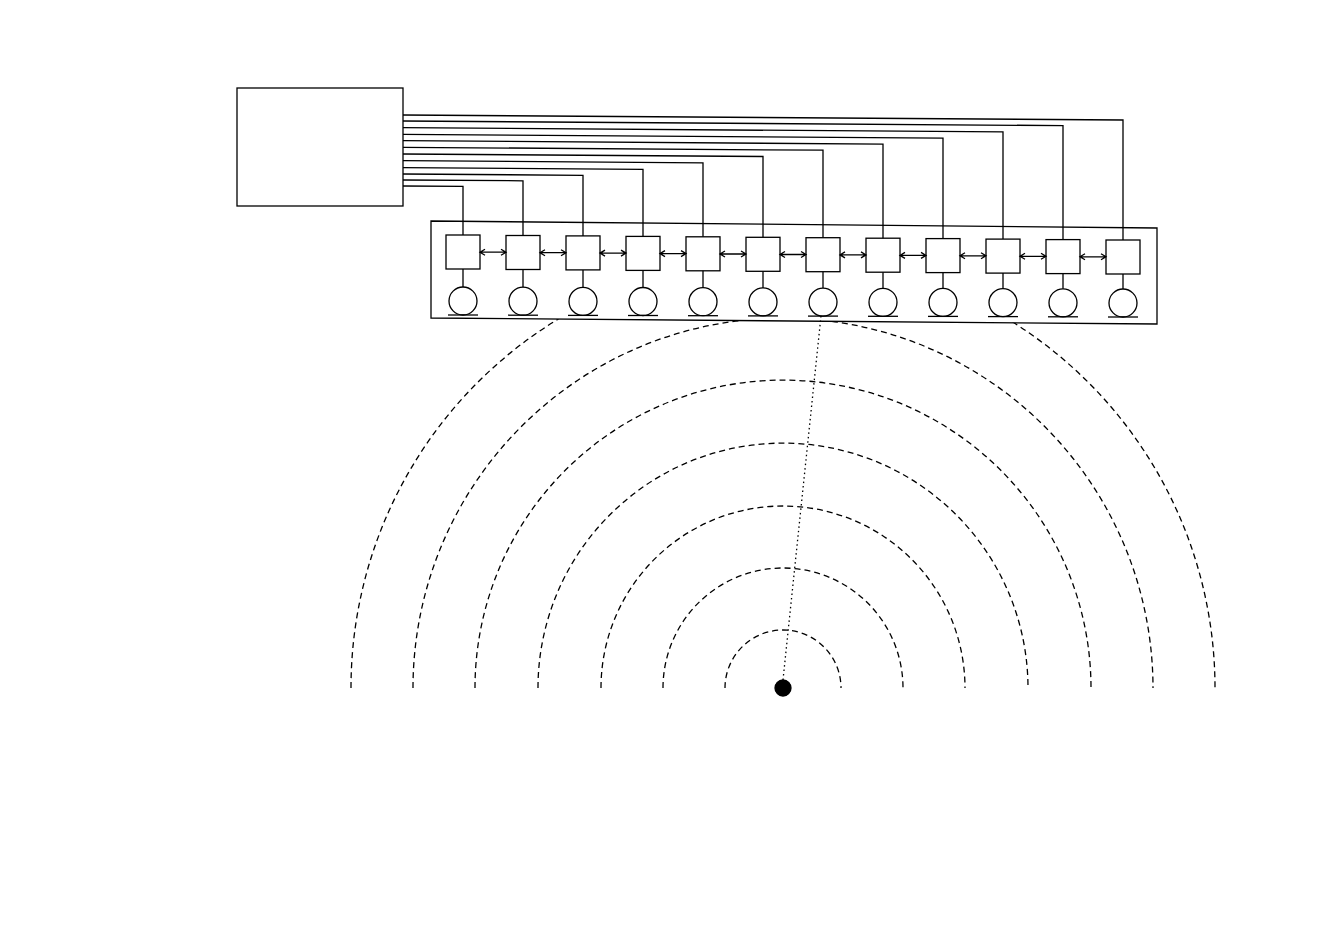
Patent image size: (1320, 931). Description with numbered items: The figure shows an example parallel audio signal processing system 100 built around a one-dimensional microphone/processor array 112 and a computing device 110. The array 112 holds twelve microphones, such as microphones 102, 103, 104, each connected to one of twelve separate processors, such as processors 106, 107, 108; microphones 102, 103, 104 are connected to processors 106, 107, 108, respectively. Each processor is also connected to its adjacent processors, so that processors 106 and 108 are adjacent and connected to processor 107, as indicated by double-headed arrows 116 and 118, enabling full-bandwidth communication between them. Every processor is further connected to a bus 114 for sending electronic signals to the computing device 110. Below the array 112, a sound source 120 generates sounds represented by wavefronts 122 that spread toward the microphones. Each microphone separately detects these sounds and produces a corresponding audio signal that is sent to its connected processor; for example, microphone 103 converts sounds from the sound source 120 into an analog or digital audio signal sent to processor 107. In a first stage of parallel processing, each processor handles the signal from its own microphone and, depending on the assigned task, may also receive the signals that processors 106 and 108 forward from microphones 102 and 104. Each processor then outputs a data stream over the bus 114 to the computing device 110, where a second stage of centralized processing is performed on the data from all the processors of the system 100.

The parallel audio signal processing system 100 is at (1185, 108).
The microphone 102 is at (752, 308).
The microphone 103 is at (818, 308).
The microphone 104 is at (888, 309).
The processor 106 is at (772, 237).
The processor 107 is at (830, 240).
The processor 108 is at (892, 243).
The computing device 110 is at (312, 190).
The microphone/processor array 112 is at (1157, 307).
The bus 114 is at (877, 110).
The double-headed arrow 116 is at (800, 257).
The double-headed arrow 118 is at (860, 257).
The sound source 120 is at (779, 694).
The wavefronts 122 is at (1028, 690).